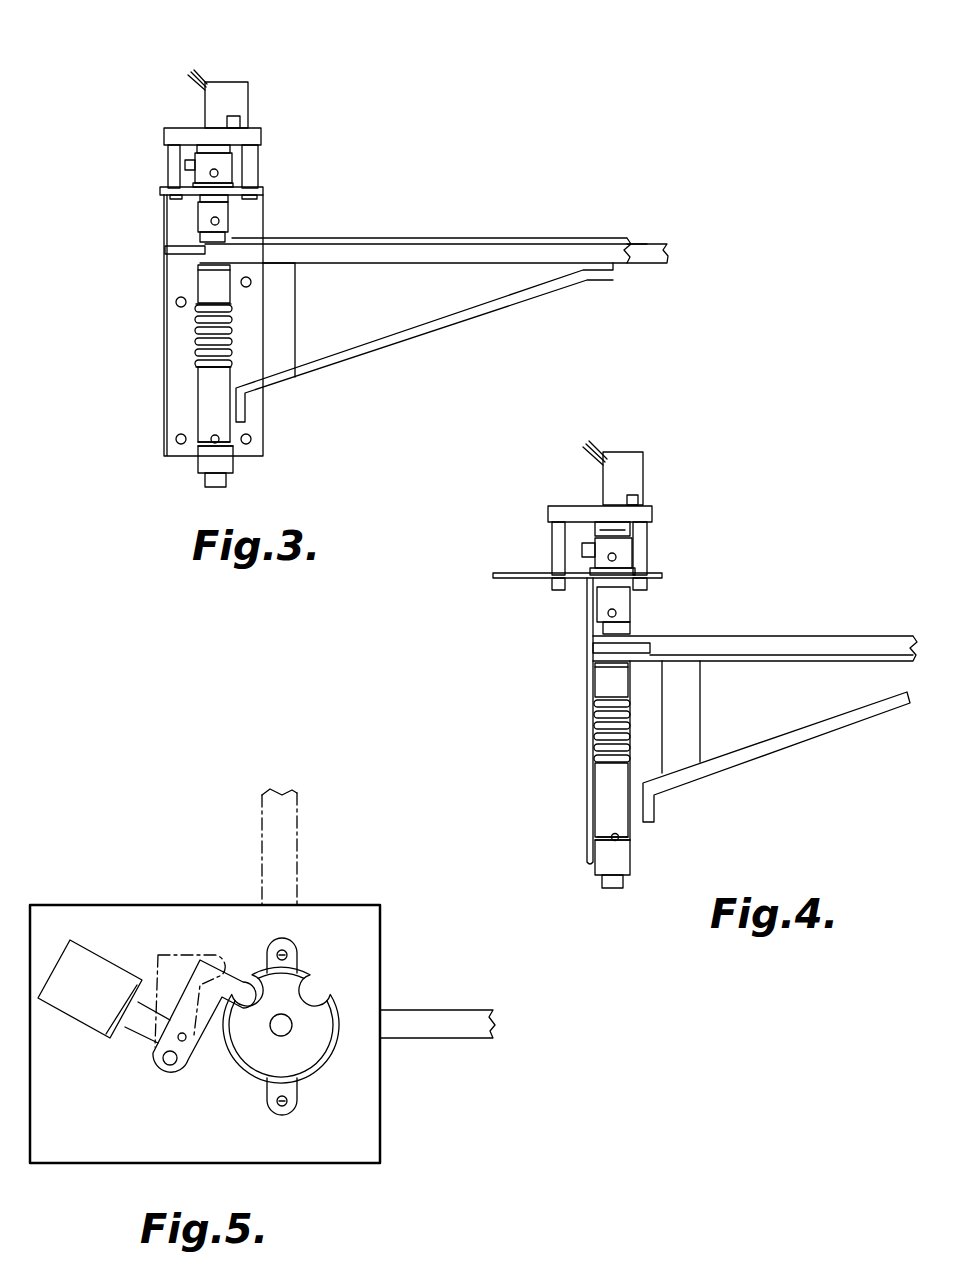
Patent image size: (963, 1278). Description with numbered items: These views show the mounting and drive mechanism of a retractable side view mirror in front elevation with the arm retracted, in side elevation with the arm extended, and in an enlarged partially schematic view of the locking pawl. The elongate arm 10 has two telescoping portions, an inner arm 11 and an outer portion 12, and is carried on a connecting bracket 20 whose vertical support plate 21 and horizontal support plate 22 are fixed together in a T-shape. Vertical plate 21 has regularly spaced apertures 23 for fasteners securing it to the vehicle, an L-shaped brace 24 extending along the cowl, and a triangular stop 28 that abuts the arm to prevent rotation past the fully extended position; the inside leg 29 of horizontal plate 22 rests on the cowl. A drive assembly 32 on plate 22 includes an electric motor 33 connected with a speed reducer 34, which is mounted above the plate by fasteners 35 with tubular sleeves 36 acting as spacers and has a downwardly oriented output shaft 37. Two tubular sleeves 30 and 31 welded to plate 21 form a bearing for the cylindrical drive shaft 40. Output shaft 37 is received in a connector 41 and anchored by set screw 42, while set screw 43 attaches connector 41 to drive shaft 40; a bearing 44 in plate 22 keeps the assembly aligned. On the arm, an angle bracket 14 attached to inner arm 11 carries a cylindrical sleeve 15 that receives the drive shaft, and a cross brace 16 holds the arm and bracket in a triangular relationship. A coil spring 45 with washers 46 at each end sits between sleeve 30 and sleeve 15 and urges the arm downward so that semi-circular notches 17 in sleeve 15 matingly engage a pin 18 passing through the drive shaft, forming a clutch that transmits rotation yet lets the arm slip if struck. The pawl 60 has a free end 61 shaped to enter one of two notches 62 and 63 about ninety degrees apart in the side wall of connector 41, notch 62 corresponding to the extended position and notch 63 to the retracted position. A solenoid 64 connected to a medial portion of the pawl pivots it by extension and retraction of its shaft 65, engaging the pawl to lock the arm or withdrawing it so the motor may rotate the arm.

In FIG. 3, the arm 10 is at (540, 244).
In FIG. 5, the arm 10 is at (287, 846).
In FIG. 3, the inner arm 11 is at (452, 240).
In FIG. 4, the inner arm 11 is at (832, 637).
In FIG. 3, the outer arm portion 12 is at (352, 148).
In FIG. 3, the angle bracket 14 is at (410, 330).
In FIG. 4, the angle bracket 14 is at (800, 734).
In FIG. 3, the sleeve 15 is at (210, 404).
In FIG. 4, the sleeve 15 is at (607, 796).
In FIG. 3, the cross brace 16 is at (290, 276).
In FIG. 4, the cross brace 16 is at (690, 693).
In FIG. 3, the notches 17 is at (218, 437).
In FIG. 4, the notches 17 is at (620, 834).
In FIG. 3, the pin 18 is at (220, 452).
In FIG. 4, the pin 18 is at (632, 838).
In FIG. 3, the bracket 20 is at (155, 294).
In FIG. 3, the vertical support plate 21 is at (165, 318).
In FIG. 4, the vertical support plate 21 is at (589, 768).
In FIG. 3, the horizontal support plate 22 is at (160, 191).
In FIG. 4, the horizontal support plate 22 is at (495, 579).
In FIG. 5, the horizontal support plate 22 is at (365, 1100).
In FIG. 3, the apertures 23 is at (255, 440).
In FIG. 3, the L-shaped brace 24 is at (640, 258).
In FIG. 3, the stop 28 is at (172, 252).
In FIG. 4, the stop 28 is at (652, 648).
In FIG. 4, the inside leg 29 is at (545, 583).
In FIG. 3, the sleeve 30 is at (225, 291).
In FIG. 4, the sleeve 30 is at (598, 681).
In FIG. 3, the sleeve 31 is at (202, 463).
In FIG. 4, the sleeve 31 is at (628, 862).
In FIG. 3, the drive assembly 32 is at (230, 78).
In FIG. 4, the drive assembly 32 is at (655, 468).
In FIG. 3, the electric motor 33 is at (240, 92).
In FIG. 4, the electric motor 33 is at (635, 455).
In FIG. 3, the speed reducer 34 is at (260, 136).
In FIG. 4, the speed reducer 34 is at (645, 514).
In FIG. 3, the fasteners 35 is at (228, 200).
In FIG. 4, the fasteners 35 is at (648, 582).
In FIG. 3, the tubular sleeves 36 is at (250, 165).
In FIG. 4, the tubular sleeves 36 is at (645, 538).
In FIG. 3, the output shaft 37 is at (197, 149).
In FIG. 4, the output shaft 37 is at (598, 536).
In FIG. 3, the drive shaft 40 is at (208, 236).
In FIG. 4, the drive shaft 40 is at (625, 632).
In FIG. 3, the connector 41 is at (190, 165).
In FIG. 4, the connector 41 is at (613, 604).
In FIG. 5, the connector 41 is at (305, 1066).
In FIG. 3, the set screw 42 is at (216, 172).
In FIG. 4, the set screw 42 is at (617, 557).
In FIG. 3, the set screw 43 is at (228, 223).
In FIG. 4, the set screw 43 is at (571, 630).
In FIG. 5, the bearing 44 is at (332, 1060).
In FIG. 3, the coil spring 45 is at (232, 332).
In FIG. 4, the coil spring 45 is at (630, 740).
In FIG. 3, the washers 46 is at (200, 366).
In FIG. 5, the pawl 60 is at (185, 962).
In FIG. 5, the free end 61 is at (240, 988).
In FIG. 5, the notch 62 is at (242, 1005).
In FIG. 5, the notch 63 is at (312, 996).
In FIG. 5, the solenoid 64 is at (93, 963).
In FIG. 5, the solenoid shaft 65 is at (140, 1016).